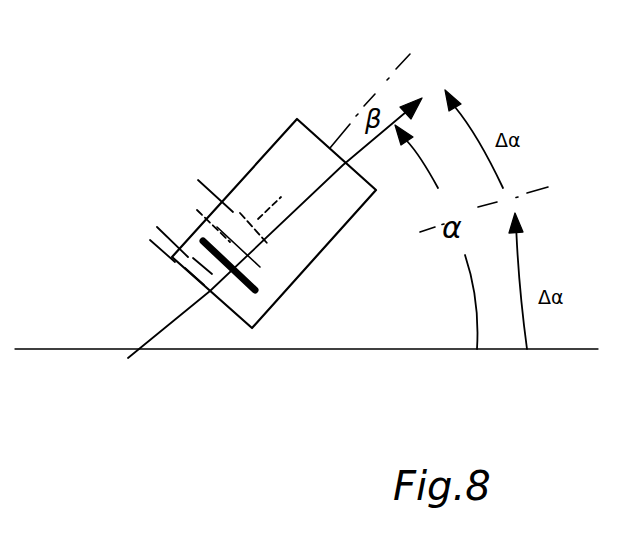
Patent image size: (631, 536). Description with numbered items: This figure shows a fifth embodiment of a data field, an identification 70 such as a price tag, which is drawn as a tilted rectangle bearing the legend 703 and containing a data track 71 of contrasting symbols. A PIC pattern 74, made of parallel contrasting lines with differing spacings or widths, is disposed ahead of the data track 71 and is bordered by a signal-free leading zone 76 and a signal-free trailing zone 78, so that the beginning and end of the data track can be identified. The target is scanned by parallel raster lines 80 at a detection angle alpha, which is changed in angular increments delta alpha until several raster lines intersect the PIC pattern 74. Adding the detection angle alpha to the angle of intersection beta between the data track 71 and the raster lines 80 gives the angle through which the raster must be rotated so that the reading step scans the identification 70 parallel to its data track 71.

The identification 70 is at (323, 236).
The housing label 703 is at (294, 159).
The data track 71 is at (412, 53).
The PIC pattern 74 is at (253, 321).
The signal-free leading zone 76 is at (153, 247).
The signal-free trailing zone 78 is at (185, 204).
The raster lines 80 is at (422, 98).